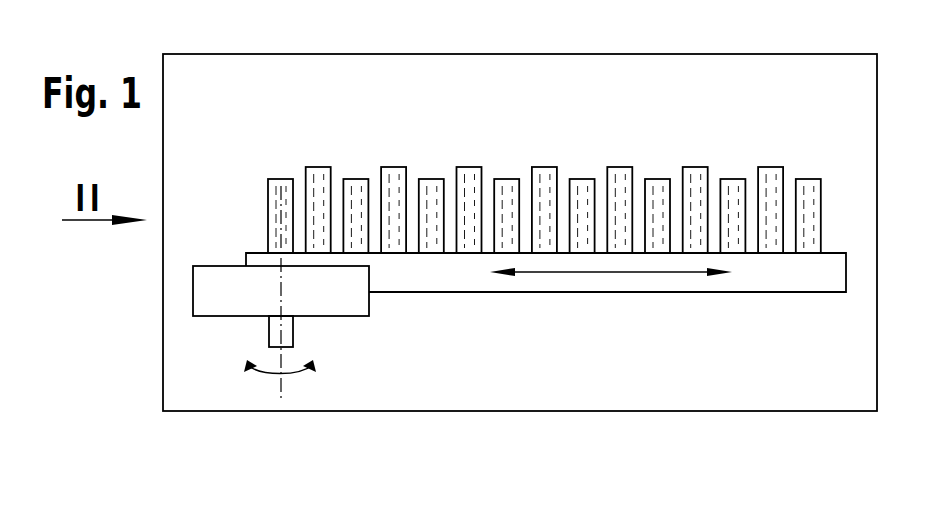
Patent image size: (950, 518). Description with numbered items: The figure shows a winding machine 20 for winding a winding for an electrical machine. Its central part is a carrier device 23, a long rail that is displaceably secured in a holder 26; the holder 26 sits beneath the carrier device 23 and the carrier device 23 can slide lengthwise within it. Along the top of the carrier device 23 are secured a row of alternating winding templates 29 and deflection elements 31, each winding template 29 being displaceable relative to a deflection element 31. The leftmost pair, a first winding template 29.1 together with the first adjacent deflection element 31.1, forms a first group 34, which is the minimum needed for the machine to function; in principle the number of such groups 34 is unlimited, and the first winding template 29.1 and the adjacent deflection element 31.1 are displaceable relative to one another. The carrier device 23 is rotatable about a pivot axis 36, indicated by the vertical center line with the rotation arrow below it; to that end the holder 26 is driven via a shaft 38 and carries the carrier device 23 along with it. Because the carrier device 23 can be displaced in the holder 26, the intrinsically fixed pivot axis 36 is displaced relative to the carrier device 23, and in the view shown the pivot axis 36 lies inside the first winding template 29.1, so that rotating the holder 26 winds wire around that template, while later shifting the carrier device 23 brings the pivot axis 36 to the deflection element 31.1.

The winding machine 20 is at (676, 428).
The carrier device 23 is at (783, 272).
The holder 26 is at (352, 301).
The winding template 29 is at (351, 187).
The first winding template 29.1 is at (277, 195).
The deflection element 31 is at (390, 175).
The first deflection element 31.1 is at (314, 170).
The first group 34 is at (338, 54).
The pivot axis 36 is at (280, 298).
The shaft 38 is at (279, 337).